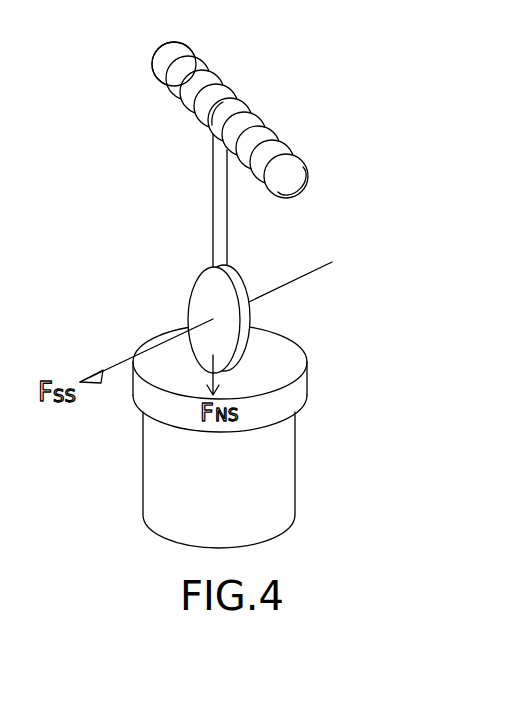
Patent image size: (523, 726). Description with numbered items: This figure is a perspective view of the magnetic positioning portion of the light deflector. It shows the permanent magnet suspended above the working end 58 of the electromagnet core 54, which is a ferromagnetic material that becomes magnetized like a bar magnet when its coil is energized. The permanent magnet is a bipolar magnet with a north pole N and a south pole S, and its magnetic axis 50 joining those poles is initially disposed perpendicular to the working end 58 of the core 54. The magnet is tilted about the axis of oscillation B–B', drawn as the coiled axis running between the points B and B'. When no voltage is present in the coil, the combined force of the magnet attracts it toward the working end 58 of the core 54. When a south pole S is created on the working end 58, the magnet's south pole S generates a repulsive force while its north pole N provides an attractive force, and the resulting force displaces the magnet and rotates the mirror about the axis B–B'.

The magnetic axis 50 is at (127, 362).
The core 54 is at (280, 468).
The working end 58 is at (293, 392).
The axis of oscillation end B is at (245, 135).
The axis of oscillation end B' is at (161, 48).
The north pole N is at (203, 311).
The south pole S is at (249, 319).